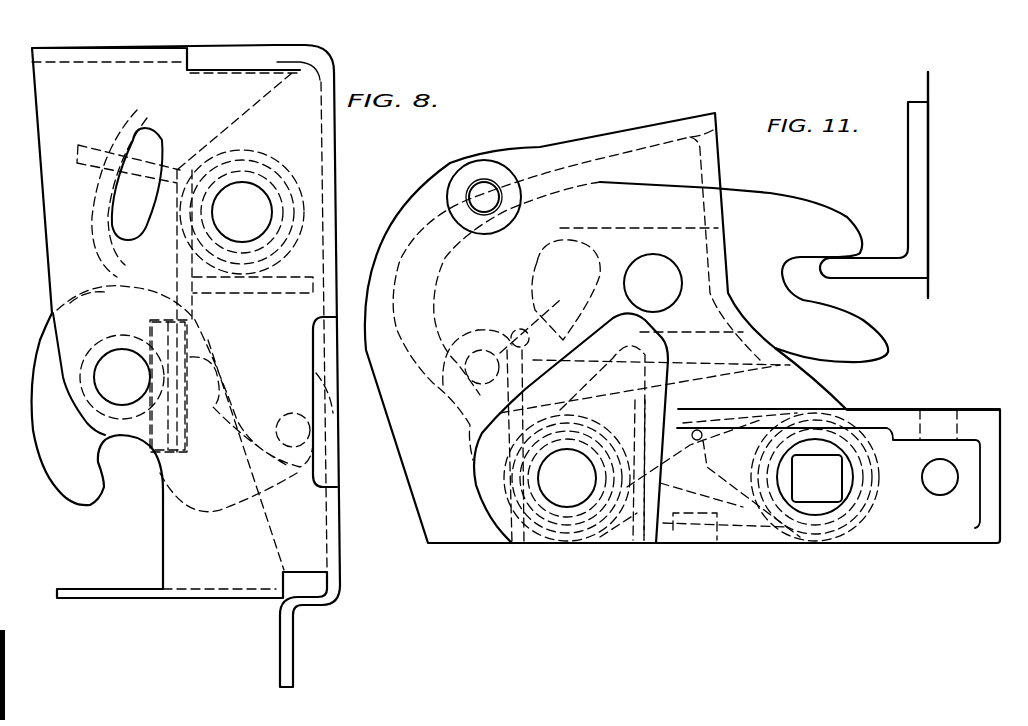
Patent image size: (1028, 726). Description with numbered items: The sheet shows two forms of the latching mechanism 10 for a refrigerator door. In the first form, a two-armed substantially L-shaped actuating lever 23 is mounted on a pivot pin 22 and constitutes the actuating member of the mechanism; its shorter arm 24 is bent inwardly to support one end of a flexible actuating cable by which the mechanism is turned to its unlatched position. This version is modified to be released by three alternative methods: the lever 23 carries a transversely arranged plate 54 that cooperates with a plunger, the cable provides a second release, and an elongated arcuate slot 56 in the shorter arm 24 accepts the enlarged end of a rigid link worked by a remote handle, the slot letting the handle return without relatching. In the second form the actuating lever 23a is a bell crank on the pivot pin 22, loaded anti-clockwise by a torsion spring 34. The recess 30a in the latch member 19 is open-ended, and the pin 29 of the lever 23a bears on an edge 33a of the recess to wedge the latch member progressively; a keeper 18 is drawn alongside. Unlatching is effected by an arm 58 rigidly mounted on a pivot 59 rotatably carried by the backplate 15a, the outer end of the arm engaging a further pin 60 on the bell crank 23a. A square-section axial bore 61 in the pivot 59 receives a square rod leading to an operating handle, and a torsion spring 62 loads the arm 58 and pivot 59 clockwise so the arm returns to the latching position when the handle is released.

In FIG. 8, the latching mechanism 10 is at (160, 544).
In FIG. 11, the latching mechanism 10 is at (723, 141).
In FIG. 11, the backplate 15a is at (603, 136).
In FIG. 11, the keeper bracket 18 is at (922, 230).
In FIG. 11, the latch member 19 is at (737, 204).
In FIG. 11, the pivot pin 22 is at (547, 477).
In FIG. 8, the actuating lever 23 is at (265, 298).
In FIG. 11, the actuating lever 23a is at (494, 397).
In FIG. 8, the shorter arm 24 is at (200, 142).
In FIG. 11, the pin 29 is at (480, 363).
In FIG. 11, the recess 30a is at (565, 307).
In FIG. 11, the edge 33a is at (517, 317).
In FIG. 11, the torsion spring 34 is at (517, 518).
In FIG. 8, the plate 54 is at (318, 385).
In FIG. 8, the arcuate slot 56 is at (136, 140).
In FIG. 11, the arm 58 is at (680, 397).
In FIG. 11, the pivot 59 is at (843, 474).
In FIG. 11, the further pin 60 is at (630, 406).
In FIG. 11, the bore 61 is at (840, 491).
In FIG. 11, the torsion spring 62 is at (847, 517).